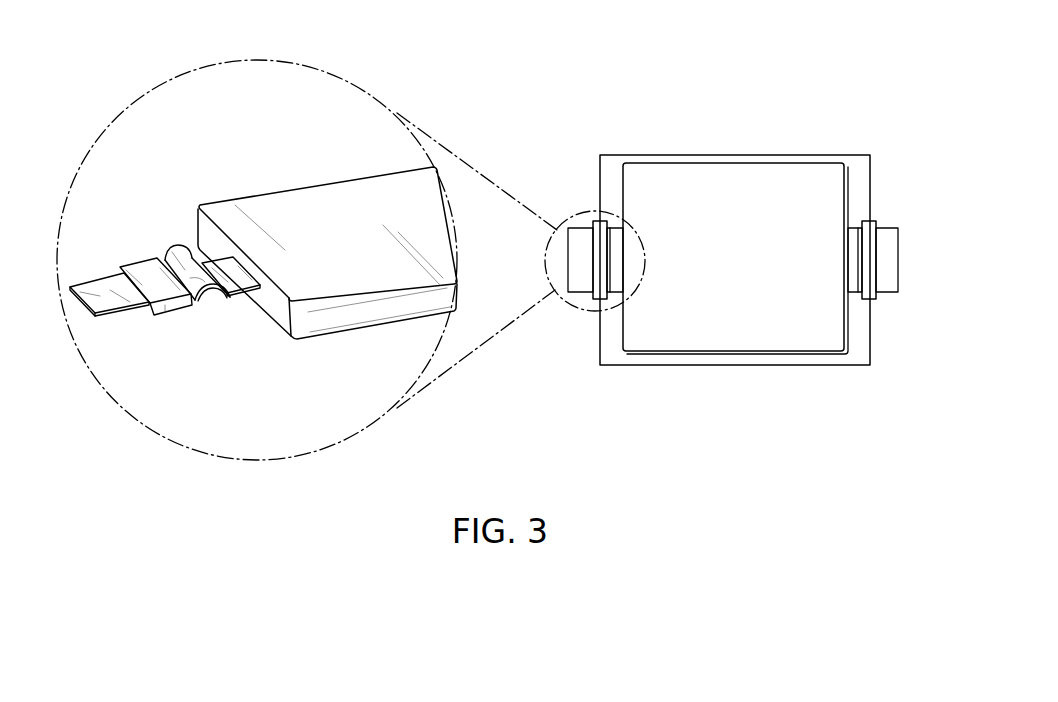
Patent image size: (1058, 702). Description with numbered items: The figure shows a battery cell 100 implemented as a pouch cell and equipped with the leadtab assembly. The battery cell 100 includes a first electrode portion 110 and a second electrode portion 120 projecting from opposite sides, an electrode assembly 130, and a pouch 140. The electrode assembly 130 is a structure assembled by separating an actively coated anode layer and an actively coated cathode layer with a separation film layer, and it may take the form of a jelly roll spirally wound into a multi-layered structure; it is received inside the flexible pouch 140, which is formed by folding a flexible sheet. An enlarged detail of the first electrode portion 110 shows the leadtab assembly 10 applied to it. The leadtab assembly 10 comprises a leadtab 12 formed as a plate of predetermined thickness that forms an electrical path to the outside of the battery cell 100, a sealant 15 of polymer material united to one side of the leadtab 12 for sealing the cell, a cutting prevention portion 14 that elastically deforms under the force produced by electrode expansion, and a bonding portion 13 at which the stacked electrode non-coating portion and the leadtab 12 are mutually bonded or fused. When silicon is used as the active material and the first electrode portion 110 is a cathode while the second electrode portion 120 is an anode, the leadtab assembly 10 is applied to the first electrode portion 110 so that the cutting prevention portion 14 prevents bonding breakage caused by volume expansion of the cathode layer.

The leadtab assembly 10 is at (173, 338).
The leadtab 12 is at (112, 317).
The bonding portion 13 is at (239, 325).
The cutting prevention portion 14 is at (200, 303).
The sealant 15 is at (172, 316).
The battery cell 100 is at (772, 190).
The first electrode portion 110 is at (346, 273).
The second electrode portion 120 is at (889, 203).
The electrode assembly 130 is at (305, 208).
The pouch 140 is at (763, 158).